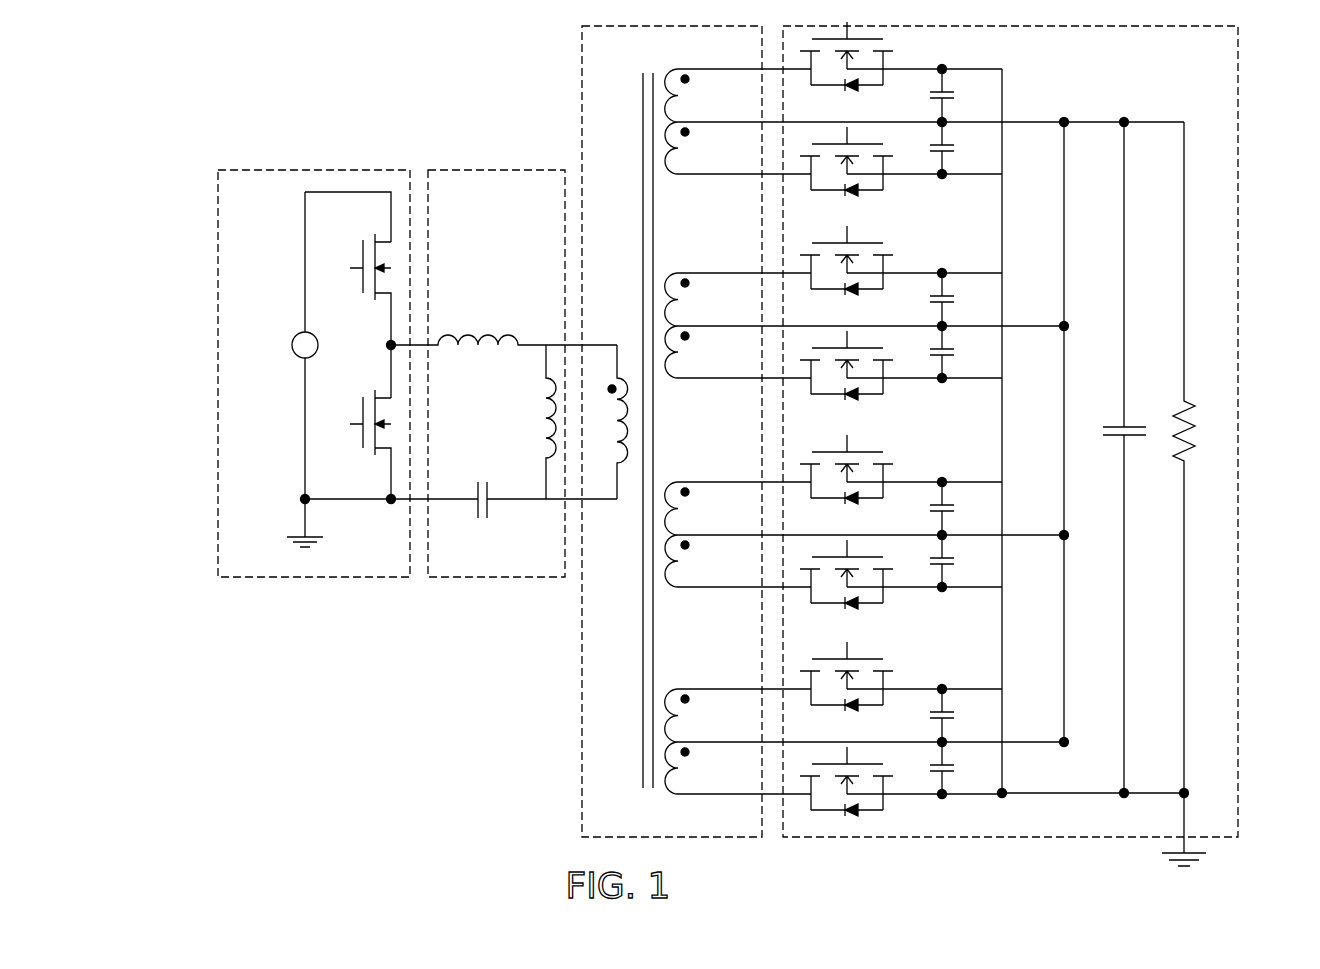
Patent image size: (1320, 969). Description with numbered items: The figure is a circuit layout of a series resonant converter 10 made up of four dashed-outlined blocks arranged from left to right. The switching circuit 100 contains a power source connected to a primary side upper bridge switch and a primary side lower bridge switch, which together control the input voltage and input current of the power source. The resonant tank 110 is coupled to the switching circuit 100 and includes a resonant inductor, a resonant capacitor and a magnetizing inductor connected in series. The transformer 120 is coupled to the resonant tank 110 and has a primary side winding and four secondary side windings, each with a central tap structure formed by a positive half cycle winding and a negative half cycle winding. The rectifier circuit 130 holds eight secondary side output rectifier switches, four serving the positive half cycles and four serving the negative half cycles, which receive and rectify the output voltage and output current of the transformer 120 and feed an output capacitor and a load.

The series resonant converter 10 is at (95, 116).
The switching circuit 100 is at (315, 170).
The resonant tank 110 is at (497, 170).
The transformer 120 is at (582, 703).
The rectifier circuit 130 is at (1238, 118).